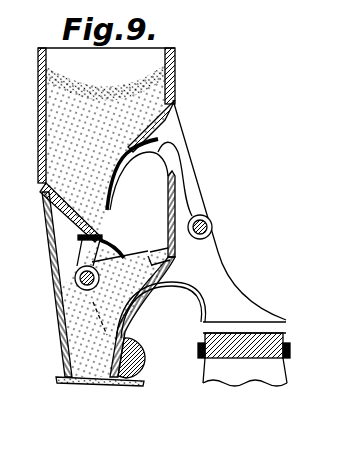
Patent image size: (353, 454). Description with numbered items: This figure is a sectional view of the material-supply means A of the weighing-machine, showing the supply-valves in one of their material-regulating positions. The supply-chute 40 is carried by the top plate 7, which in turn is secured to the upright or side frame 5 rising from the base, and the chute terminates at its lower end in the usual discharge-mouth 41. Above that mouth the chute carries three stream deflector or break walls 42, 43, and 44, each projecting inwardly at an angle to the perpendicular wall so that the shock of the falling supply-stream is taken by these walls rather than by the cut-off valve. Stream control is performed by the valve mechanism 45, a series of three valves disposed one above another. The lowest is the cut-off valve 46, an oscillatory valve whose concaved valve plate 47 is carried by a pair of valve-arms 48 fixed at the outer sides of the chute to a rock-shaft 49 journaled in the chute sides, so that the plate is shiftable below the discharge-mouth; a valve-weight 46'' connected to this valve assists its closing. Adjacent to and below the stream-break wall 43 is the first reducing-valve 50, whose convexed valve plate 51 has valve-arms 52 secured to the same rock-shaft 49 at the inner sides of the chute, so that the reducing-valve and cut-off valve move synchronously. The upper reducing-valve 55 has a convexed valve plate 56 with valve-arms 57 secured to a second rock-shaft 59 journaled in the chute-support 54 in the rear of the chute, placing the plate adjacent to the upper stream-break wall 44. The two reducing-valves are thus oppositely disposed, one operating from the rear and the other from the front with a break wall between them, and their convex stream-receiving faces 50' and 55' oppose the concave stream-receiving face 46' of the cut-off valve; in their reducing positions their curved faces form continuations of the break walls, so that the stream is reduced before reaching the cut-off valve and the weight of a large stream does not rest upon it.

The supply-chute 40 is at (176, 80).
The material-supply means A is at (199, 96).
The stream-break wall 44 is at (160, 128).
The reducing-valve 55 is at (172, 134).
The convex face 55' is at (55, 164).
The convexed valve plate 56 is at (120, 172).
The convexed valve plate 51 is at (119, 228).
The valve-arms 57 is at (190, 182).
The chute-support 54 is at (213, 243).
The second rock-shaft 59 is at (211, 226).
The reducing-valve 50 is at (133, 216).
The convex face 50' is at (150, 255).
The valve-arms 52 is at (151, 270).
The valve mechanism 45 is at (99, 214).
The stream-break wall 43 is at (67, 217).
The concave face 46' is at (52, 284).
The valve-arms 48 is at (110, 310).
The rock-shaft 49 is at (80, 273).
The valve-weight 46'' is at (148, 357).
The concaved valve plate 47 is at (102, 382).
The discharge-mouth 41 is at (77, 385).
The cut-off valve 46 is at (134, 393).
The stream-break wall 42 is at (181, 281).
The top plate 7 is at (272, 328).
The upright 5 is at (237, 370).